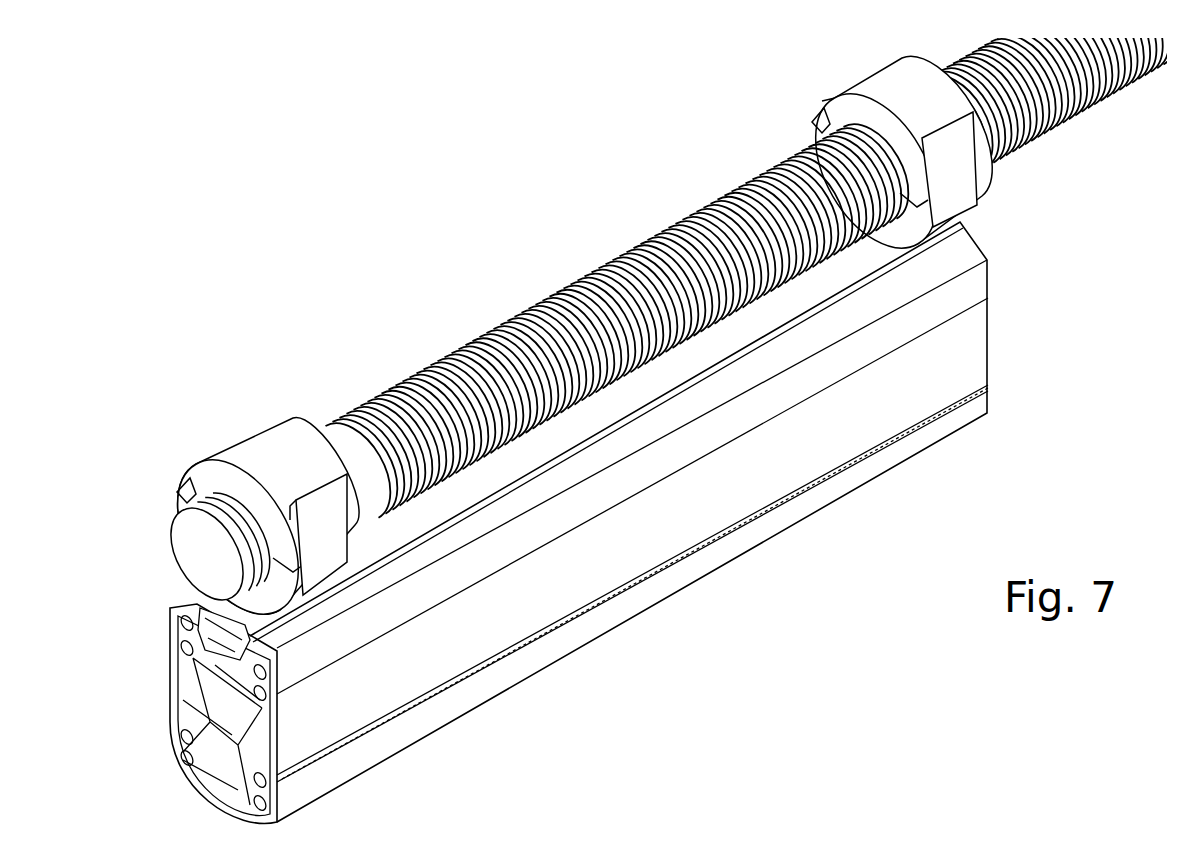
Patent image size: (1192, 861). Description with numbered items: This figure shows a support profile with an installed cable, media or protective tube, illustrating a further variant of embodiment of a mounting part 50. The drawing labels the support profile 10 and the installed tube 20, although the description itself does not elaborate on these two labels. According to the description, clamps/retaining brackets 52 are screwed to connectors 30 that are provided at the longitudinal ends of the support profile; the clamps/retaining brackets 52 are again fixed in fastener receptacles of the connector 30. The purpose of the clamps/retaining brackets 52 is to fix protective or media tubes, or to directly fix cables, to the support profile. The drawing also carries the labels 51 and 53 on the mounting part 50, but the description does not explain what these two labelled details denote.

The profile rail 10 is at (594, 656).
The threaded spindle 20 is at (607, 407).
The connector 30 is at (227, 648).
The mounting part 50 is at (253, 442).
The retaining tab 51 is at (353, 425).
The clamps/retaining brackets 52 is at (223, 425).
The slot 53 is at (195, 480).